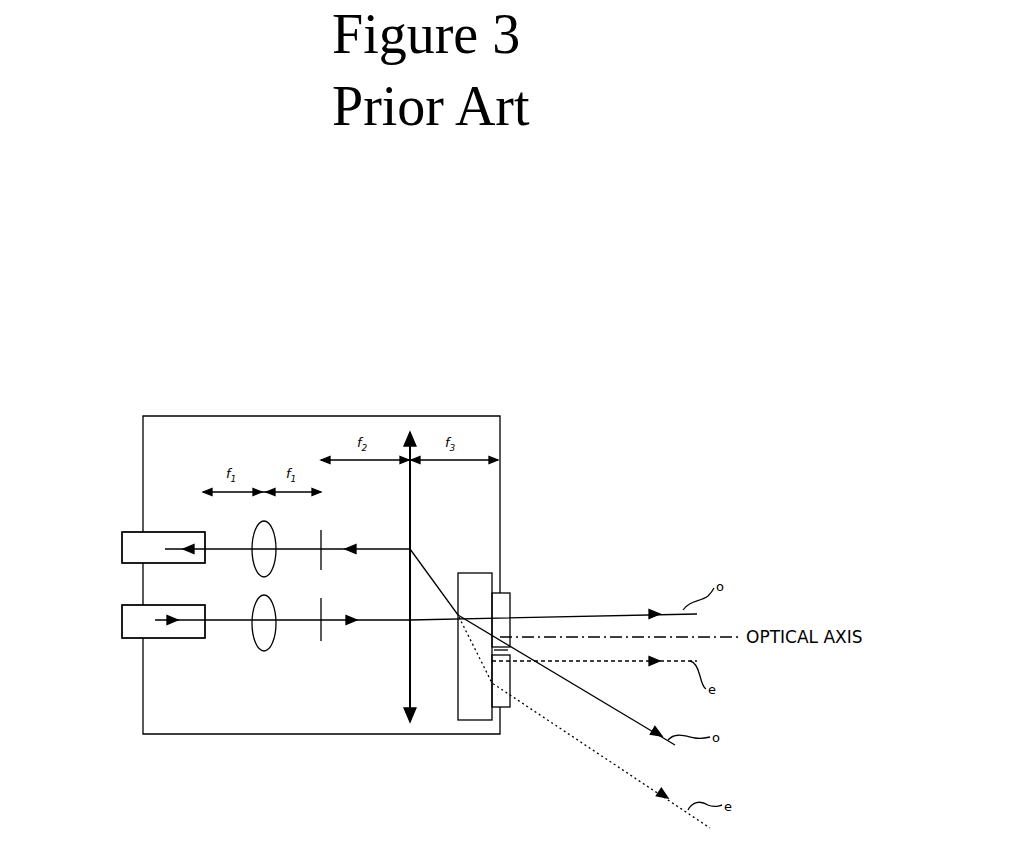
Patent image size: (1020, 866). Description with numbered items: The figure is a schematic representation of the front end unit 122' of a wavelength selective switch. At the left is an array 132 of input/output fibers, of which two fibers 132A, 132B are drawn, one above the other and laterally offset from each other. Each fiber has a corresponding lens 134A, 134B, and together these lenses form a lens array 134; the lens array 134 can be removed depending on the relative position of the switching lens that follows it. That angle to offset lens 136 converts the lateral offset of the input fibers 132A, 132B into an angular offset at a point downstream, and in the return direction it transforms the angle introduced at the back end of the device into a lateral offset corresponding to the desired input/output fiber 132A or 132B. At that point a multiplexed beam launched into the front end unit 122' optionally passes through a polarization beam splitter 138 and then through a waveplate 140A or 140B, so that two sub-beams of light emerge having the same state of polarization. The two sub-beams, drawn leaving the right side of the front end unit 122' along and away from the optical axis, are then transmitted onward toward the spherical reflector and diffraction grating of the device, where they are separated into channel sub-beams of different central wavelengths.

The front end unit 122' is at (687, 373).
The array of input/output fibers 132 is at (120, 421).
The input/output fiber 132A is at (131, 532).
The input/output fiber 132B is at (130, 638).
The lens array 134 is at (258, 414).
The lens 134A is at (272, 526).
The lens 134B is at (260, 647).
The angle to offset lens 136 is at (412, 493).
The polarization beam splitter 138 is at (482, 573).
The waveplate 140A is at (510, 603).
The waveplate 140B is at (510, 681).